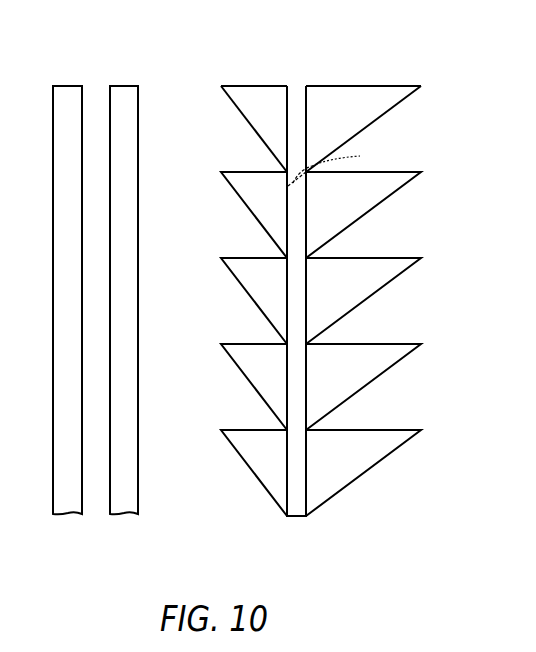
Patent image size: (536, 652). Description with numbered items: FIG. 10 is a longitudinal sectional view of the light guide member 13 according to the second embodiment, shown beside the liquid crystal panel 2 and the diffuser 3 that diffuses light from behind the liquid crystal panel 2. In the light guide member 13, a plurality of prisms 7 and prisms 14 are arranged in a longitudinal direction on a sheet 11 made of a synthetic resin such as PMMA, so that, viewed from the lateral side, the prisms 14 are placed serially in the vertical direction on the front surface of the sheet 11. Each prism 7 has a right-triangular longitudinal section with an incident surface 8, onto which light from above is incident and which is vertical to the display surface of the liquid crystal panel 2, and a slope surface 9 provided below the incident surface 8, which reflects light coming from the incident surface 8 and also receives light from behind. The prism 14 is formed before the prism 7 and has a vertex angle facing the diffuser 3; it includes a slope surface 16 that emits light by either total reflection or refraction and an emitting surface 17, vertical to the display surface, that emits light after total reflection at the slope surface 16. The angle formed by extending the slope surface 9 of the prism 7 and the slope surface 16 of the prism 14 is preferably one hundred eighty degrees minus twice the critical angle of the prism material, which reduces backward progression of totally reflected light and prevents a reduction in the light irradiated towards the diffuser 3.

The liquid crystal panel 2 is at (73, 89).
The diffuser 3 is at (129, 89).
The prism 7 is at (343, 93).
The incident surface 8 is at (385, 85).
The slope surface 9 is at (390, 113).
The sheet 11 is at (298, 517).
The light guide member 13 is at (366, 294).
The prism 14 is at (243, 93).
The slope surface 16 is at (252, 127).
The emitting surface 17 is at (258, 85).